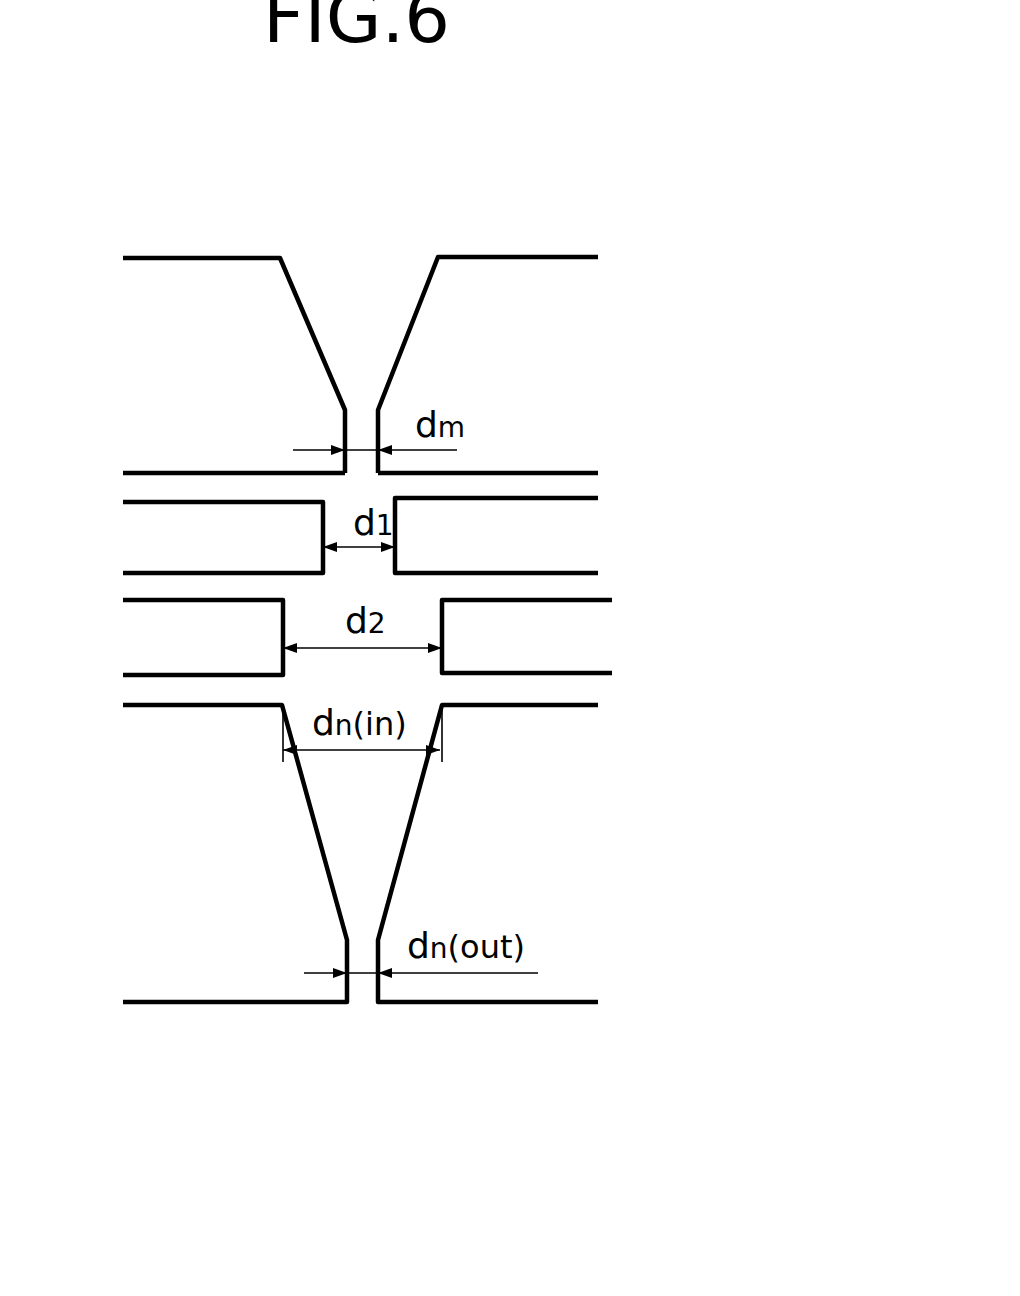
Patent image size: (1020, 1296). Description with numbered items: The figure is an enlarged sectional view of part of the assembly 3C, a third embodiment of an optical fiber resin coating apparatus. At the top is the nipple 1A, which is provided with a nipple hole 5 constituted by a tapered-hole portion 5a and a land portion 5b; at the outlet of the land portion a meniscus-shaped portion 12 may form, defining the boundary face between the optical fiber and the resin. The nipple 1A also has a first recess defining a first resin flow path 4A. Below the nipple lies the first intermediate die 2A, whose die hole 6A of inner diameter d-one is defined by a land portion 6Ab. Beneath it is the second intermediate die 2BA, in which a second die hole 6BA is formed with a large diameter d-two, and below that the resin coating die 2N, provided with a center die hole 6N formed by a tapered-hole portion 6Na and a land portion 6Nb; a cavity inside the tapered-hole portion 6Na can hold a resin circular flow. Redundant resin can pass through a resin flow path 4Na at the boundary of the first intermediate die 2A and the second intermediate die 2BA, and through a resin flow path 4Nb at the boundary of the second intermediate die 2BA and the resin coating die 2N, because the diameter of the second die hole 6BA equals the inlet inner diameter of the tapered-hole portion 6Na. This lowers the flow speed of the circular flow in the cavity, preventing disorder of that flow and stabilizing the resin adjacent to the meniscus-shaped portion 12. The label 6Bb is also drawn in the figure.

The nipple 1A is at (557, 320).
The meniscus-shaped portion 12 is at (363, 468).
The nipple hole 5 is at (538, 170).
The tapered-hole portion 5a is at (368, 312).
The land portion 5b is at (368, 433).
The assembly 3C is at (880, 297).
The first resin flow path 4A is at (228, 485).
The land portion 6Ab is at (396, 505).
The resin flow path 4Na is at (203, 590).
The first intermediate die 2A is at (557, 522).
The die hole 6A is at (372, 568).
The resin flow path 4Nb is at (203, 690).
The inlet opening 6Bb is at (438, 622).
The second intermediate die 2BA is at (553, 650).
The second die hole 6BA is at (390, 667).
The resin coating die 2N is at (533, 837).
The tapered-hole portion 6Na is at (323, 812).
The land portion 6Nb is at (363, 992).
The center die hole 6N is at (250, 1110).